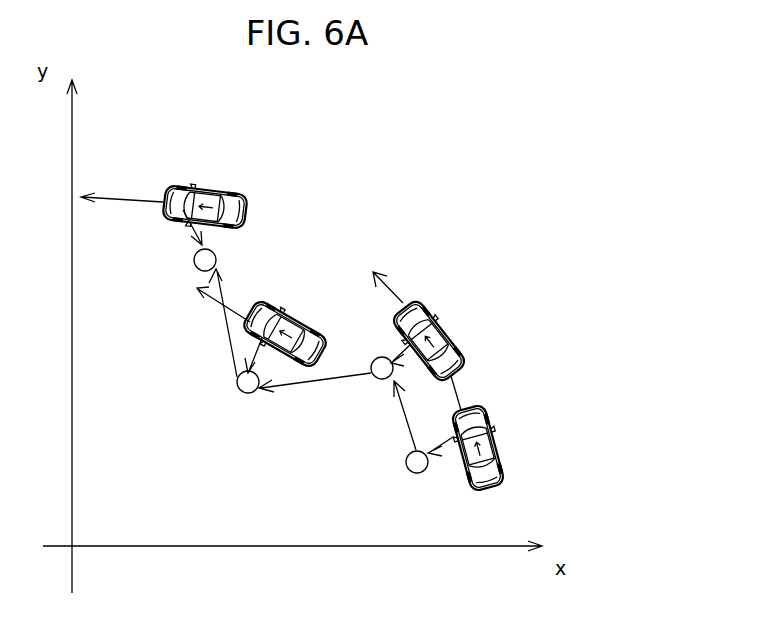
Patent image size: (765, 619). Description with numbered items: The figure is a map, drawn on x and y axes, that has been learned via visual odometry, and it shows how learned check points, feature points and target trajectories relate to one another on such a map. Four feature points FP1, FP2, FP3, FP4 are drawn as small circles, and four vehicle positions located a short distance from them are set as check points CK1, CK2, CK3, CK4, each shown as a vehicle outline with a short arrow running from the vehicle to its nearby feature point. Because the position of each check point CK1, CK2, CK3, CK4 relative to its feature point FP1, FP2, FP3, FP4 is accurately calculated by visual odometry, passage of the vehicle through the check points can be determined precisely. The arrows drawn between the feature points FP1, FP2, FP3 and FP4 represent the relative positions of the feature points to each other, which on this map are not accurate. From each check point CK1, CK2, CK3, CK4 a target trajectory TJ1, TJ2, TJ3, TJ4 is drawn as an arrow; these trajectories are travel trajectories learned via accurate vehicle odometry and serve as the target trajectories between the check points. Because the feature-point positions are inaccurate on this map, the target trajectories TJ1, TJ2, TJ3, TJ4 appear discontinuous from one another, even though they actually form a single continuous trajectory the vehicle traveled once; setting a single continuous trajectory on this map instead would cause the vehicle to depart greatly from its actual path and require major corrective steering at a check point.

The check point CK1 is at (501, 445).
The check point CK2 is at (450, 323).
The check point CK3 is at (290, 318).
The check point CK4 is at (228, 191).
The target trajectory TJ1 is at (458, 389).
The target trajectory TJ2 is at (393, 287).
The target trajectory TJ3 is at (226, 306).
The target trajectory TJ4 is at (130, 196).
The feature point FP1 is at (405, 463).
The feature point FP2 is at (374, 378).
The feature point FP3 is at (234, 392).
The feature point FP4 is at (194, 259).